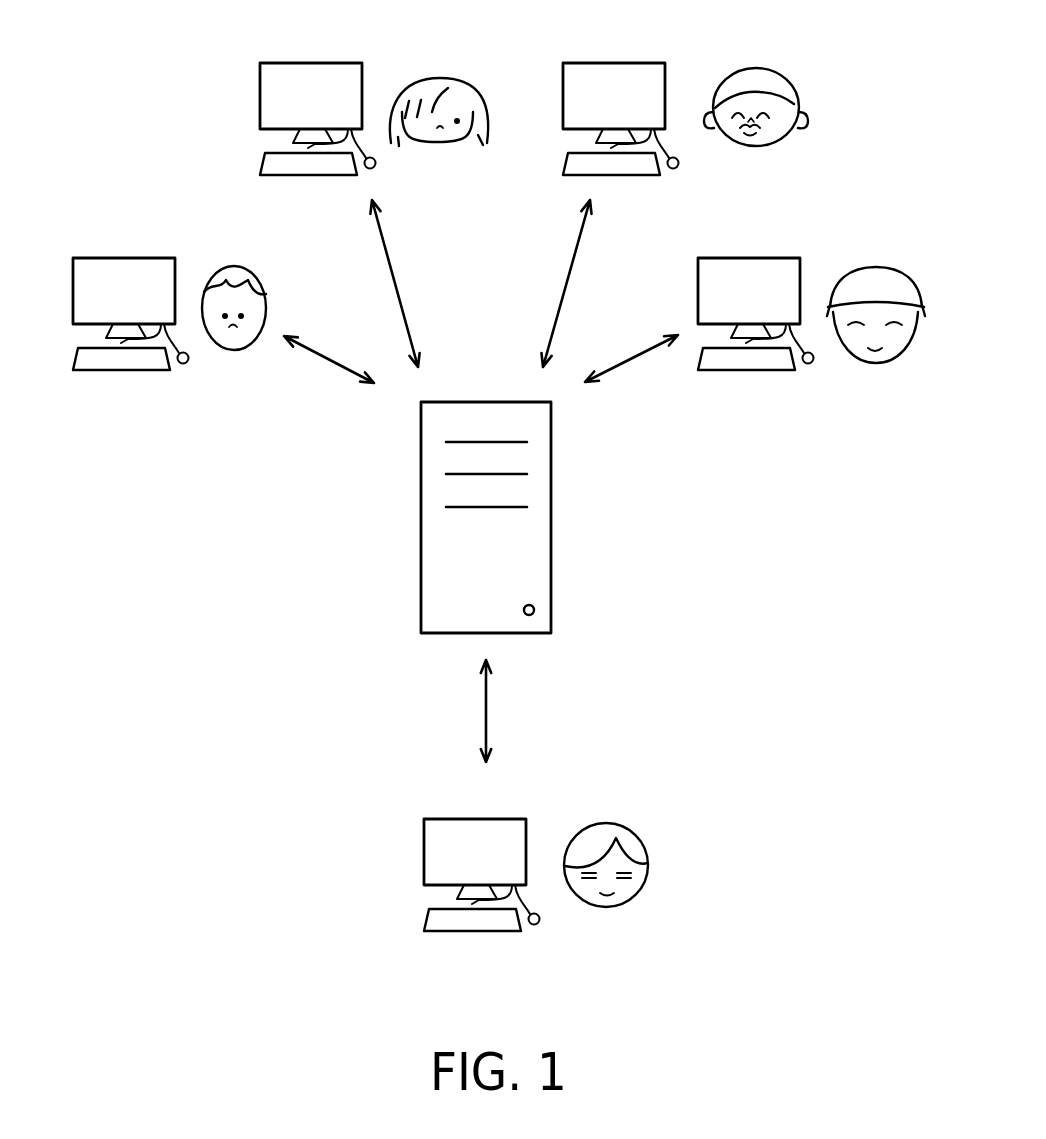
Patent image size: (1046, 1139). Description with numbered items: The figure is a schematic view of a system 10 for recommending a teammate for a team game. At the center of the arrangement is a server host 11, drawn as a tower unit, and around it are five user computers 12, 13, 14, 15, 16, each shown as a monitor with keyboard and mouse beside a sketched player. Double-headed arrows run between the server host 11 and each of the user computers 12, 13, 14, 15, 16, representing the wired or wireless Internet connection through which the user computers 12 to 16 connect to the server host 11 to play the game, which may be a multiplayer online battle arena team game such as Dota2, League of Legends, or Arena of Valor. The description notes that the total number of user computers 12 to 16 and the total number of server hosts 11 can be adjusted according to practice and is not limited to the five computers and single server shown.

The system for recommending a teammate for a team game 10 is at (926, 896).
The server host 11 is at (551, 515).
The user computer 12 is at (536, 850).
The user computer 13 is at (169, 289).
The user computer 14 is at (374, 94).
The user computer 15 is at (685, 94).
The user computer 16 is at (811, 289).